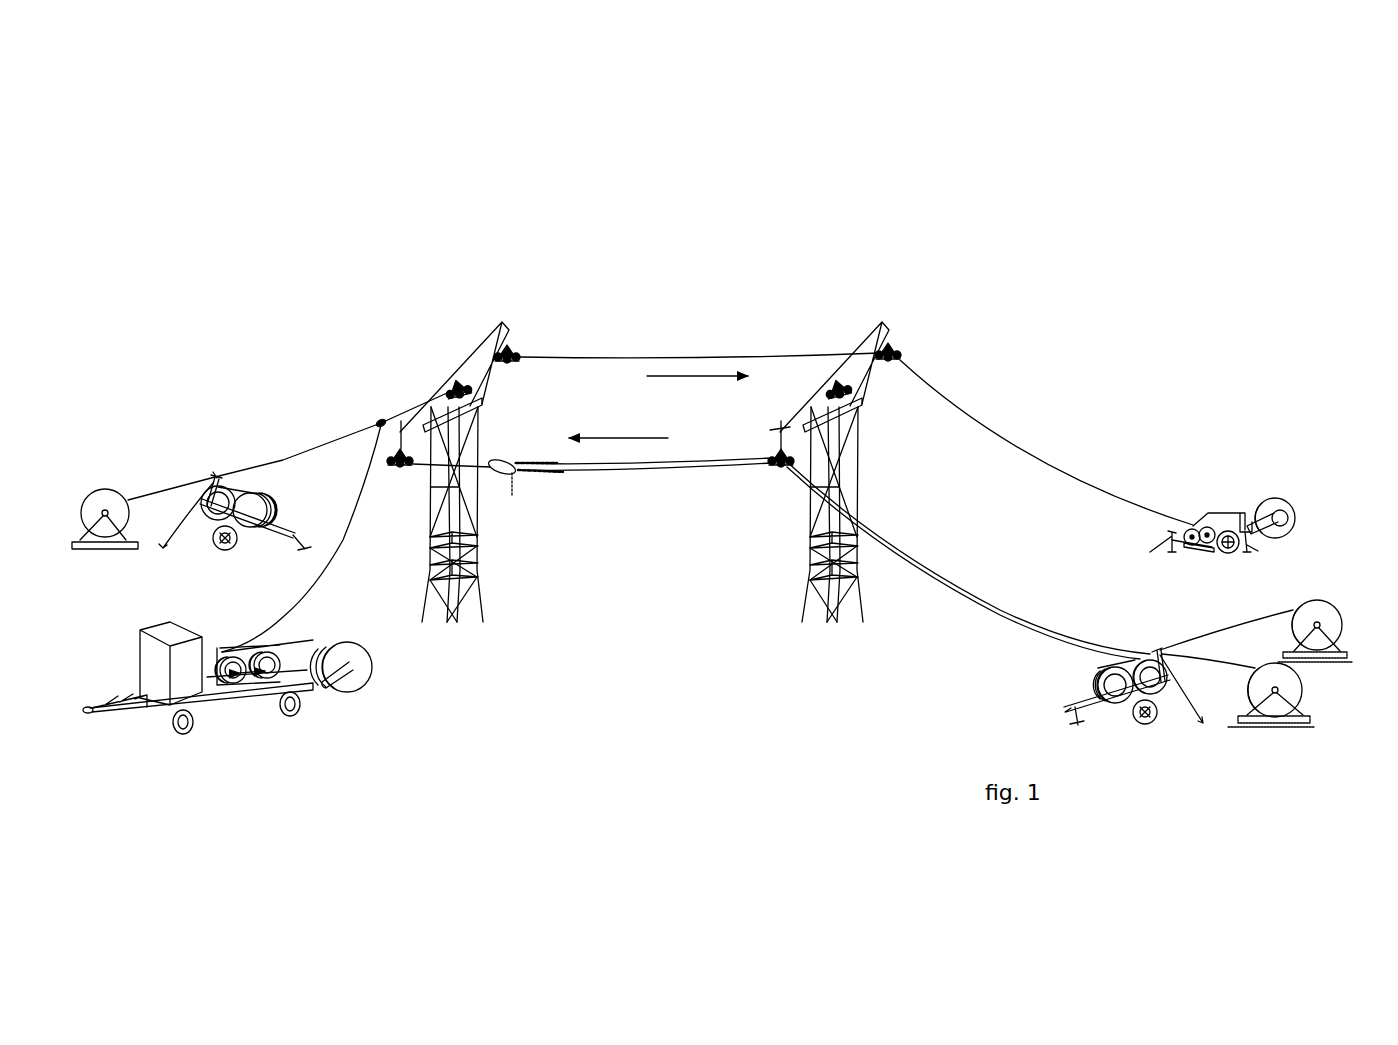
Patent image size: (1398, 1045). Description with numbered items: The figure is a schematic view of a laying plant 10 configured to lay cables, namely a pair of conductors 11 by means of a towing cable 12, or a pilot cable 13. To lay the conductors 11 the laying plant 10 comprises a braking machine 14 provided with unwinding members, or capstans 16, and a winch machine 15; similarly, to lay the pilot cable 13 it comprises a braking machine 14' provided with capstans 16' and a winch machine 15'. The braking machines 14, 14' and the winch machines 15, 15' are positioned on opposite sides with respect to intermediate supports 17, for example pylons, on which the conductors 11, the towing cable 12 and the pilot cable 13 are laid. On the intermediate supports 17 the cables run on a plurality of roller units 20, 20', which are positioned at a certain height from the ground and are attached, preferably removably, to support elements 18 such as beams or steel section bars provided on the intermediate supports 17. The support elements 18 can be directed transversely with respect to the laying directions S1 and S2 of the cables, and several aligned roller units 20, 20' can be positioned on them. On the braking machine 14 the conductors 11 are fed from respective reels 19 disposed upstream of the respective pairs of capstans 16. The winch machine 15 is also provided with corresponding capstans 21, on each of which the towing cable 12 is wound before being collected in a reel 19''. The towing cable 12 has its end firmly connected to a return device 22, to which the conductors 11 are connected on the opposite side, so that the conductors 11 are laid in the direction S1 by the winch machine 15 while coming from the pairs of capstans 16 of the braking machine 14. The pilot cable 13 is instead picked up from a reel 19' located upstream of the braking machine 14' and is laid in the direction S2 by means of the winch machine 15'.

The laying plant 10 is at (397, 216).
The conductors 11 is at (660, 470).
The towing cable 12 is at (324, 573).
The pilot cable 13 is at (600, 356).
The braking machine 14 is at (1178, 693).
The braking machine 14' is at (249, 471).
The winch machine 15 is at (240, 702).
The winch machine 15' is at (1222, 489).
The capstans 16 is at (1130, 650).
The capstans 16' is at (239, 476).
The intermediate supports 17 is at (500, 576).
The support elements 18 is at (476, 359).
The reels 19 is at (1306, 663).
The reel 19' is at (105, 498).
The reel 19'' is at (354, 702).
The roller unit 20 is at (713, 312).
The roller unit 20' is at (597, 479).
The capstans 21 is at (270, 677).
The return device 22 is at (527, 487).
The laying direction S1 is at (625, 437).
The laying direction S2 is at (690, 375).